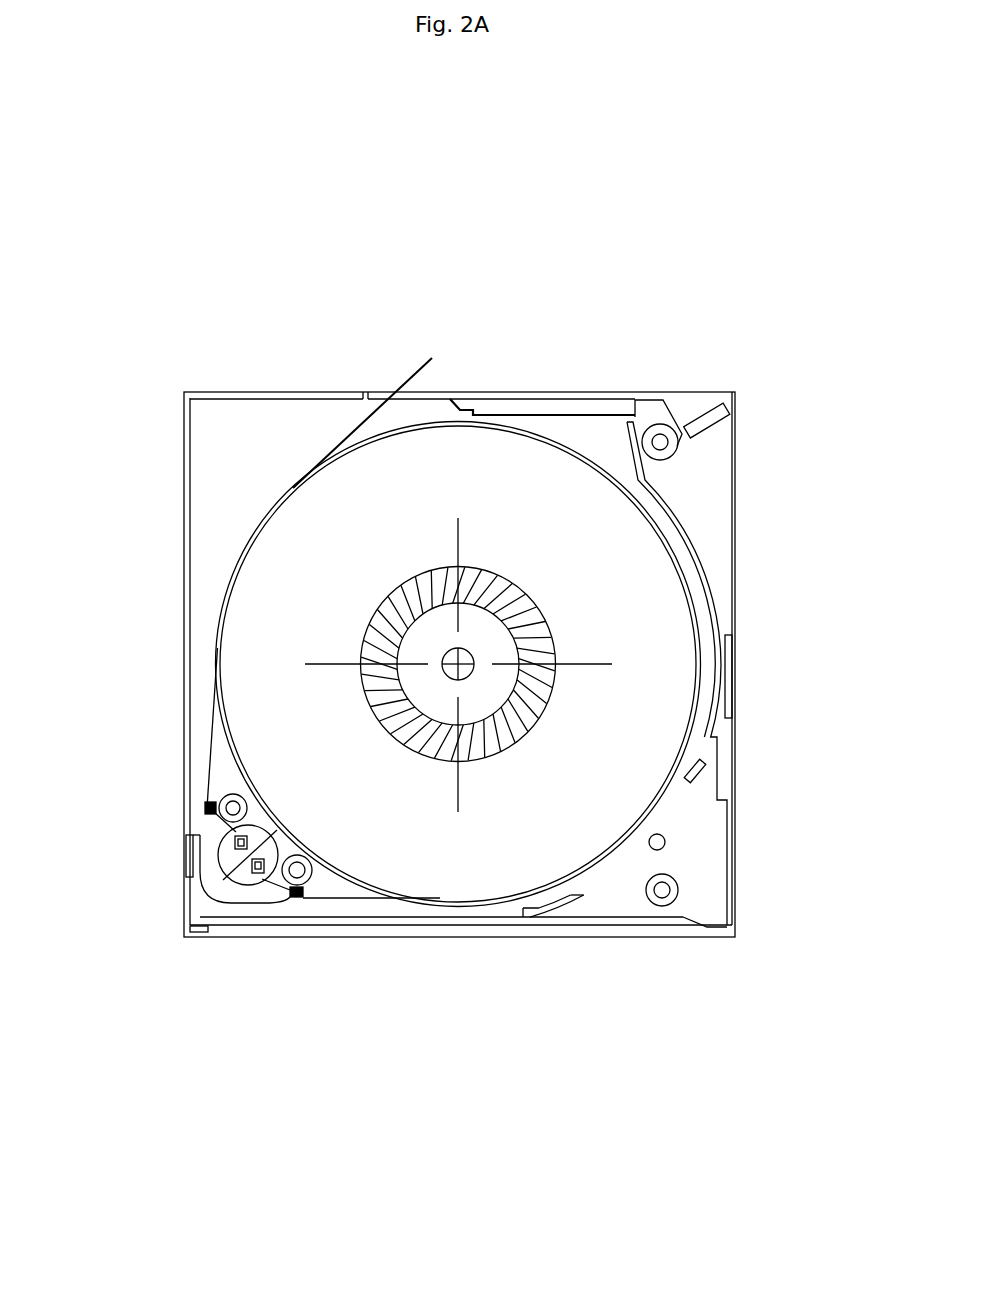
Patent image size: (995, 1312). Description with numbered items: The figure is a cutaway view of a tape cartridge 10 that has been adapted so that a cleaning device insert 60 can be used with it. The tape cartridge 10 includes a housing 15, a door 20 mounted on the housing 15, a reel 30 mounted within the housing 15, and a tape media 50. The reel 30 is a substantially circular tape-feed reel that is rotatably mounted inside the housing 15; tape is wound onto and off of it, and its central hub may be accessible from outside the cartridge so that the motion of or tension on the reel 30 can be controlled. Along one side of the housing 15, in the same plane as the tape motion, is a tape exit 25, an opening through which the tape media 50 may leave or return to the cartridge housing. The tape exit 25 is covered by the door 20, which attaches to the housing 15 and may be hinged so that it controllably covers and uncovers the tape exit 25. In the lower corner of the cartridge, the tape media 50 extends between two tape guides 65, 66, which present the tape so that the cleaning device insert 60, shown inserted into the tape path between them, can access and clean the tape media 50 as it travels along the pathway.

The tape cartridge 10 is at (455, 1077).
The housing 15 is at (740, 500).
The door 20 is at (531, 390).
The tape exit 25 is at (363, 386).
The reel 30 is at (513, 816).
The tape media 50 is at (353, 432).
The cleaning device insert 60 is at (250, 889).
The tape guide 65 is at (204, 809).
The tape guide 66 is at (298, 904).